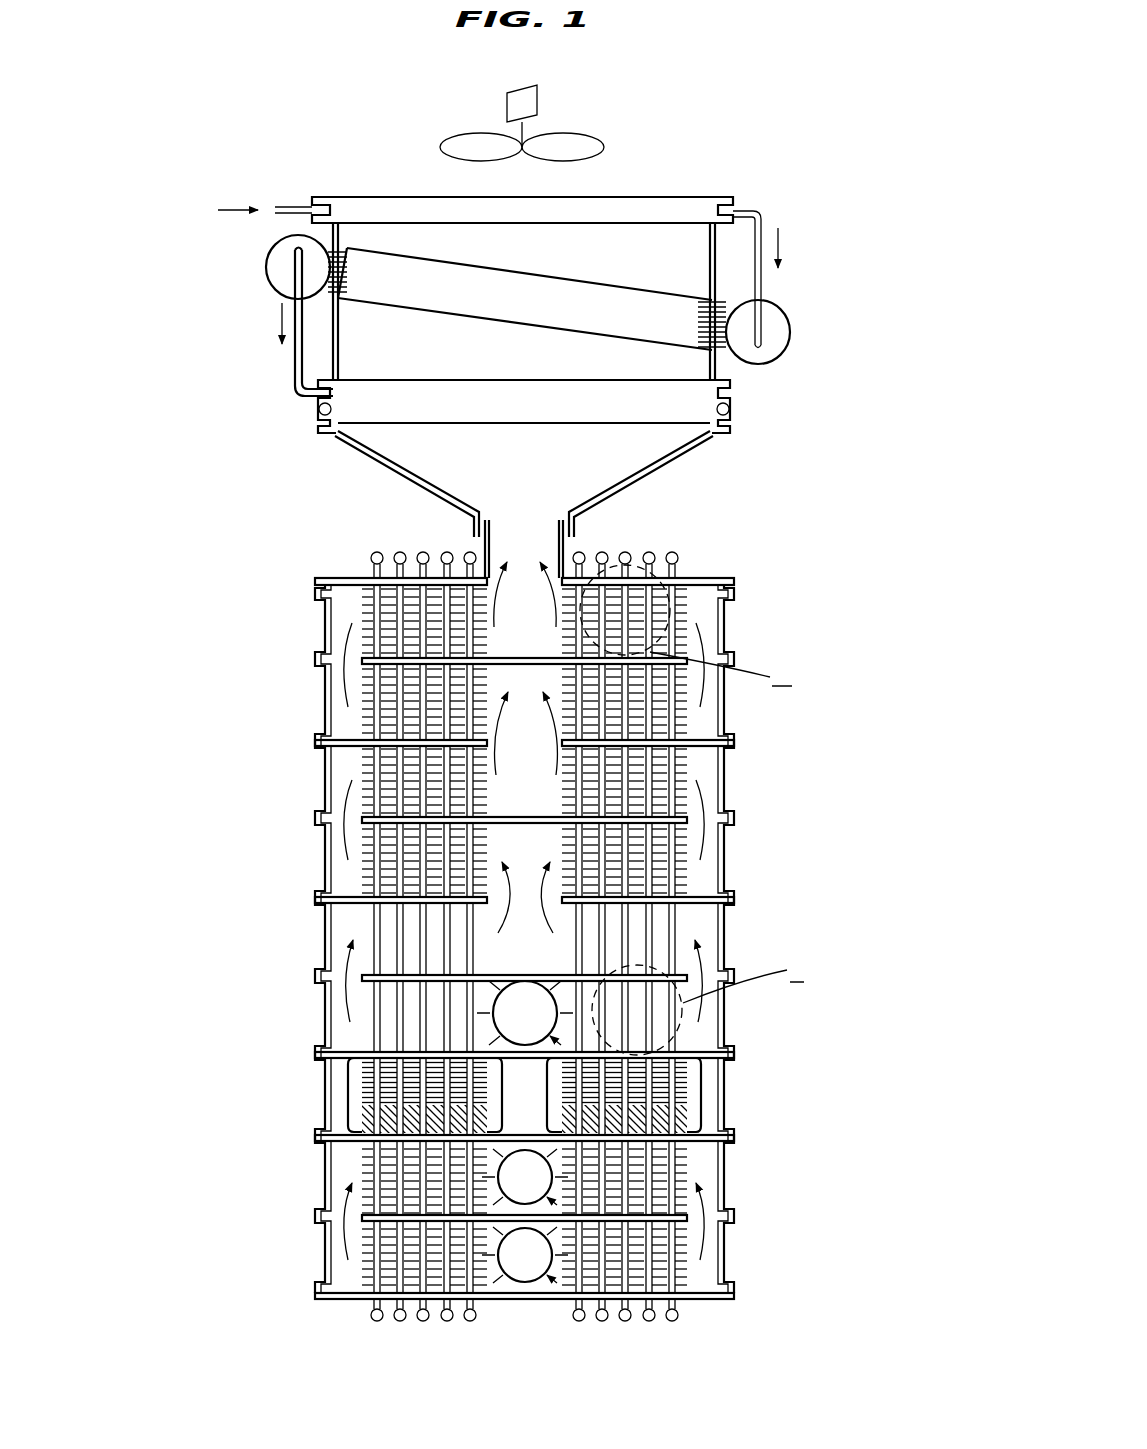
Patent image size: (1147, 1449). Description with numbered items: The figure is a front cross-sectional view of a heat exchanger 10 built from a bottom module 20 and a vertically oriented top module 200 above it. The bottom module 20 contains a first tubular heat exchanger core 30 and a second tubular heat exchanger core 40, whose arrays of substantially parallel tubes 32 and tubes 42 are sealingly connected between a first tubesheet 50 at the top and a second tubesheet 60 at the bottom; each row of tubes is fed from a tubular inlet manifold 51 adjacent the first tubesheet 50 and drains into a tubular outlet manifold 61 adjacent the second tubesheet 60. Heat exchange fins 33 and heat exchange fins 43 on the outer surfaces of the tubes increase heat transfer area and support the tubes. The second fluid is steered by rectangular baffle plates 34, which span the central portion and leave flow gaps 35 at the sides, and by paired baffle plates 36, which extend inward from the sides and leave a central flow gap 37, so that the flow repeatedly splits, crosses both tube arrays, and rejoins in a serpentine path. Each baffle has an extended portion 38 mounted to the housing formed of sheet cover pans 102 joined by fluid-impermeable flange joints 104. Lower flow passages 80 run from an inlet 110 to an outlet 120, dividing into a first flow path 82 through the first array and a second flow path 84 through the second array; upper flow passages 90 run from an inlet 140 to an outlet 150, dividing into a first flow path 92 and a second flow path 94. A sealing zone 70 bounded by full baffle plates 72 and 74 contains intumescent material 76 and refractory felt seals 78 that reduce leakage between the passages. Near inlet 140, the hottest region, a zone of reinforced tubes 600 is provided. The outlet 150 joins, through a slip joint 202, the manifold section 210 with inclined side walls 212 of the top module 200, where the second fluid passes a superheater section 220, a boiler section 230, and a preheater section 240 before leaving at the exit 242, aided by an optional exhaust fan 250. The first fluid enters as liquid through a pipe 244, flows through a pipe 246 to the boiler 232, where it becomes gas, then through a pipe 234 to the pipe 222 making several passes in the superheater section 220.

The heat exchanger 10 is at (165, 225).
The bottom module 20 is at (216, 1305).
The first tubular heat exchanger core 30 is at (393, 605).
The tubes of the first core 32 is at (378, 720).
The heat exchange fins 33 is at (412, 600).
The baffle plate 34 is at (519, 657).
The flow gap 35 is at (345, 982).
The baffle plate 36 is at (345, 740).
The central flow gap 37 is at (522, 870).
The extended portion 38 is at (316, 745).
The second tubular heat exchanger core 40 is at (662, 782).
The tubes of the second core 42 is at (680, 767).
The heat exchange fins 43 is at (680, 620).
The first tubesheet 50 is at (330, 578).
The inlet manifold 51 is at (678, 556).
The second tubesheet 60 is at (737, 1296).
The outlet manifold 61 is at (675, 1320).
The sealing zone 70 is at (280, 1135).
The full baffle plate 72 is at (708, 1135).
The full baffle plate 74 is at (714, 1052).
The intumescent material 76 is at (688, 1116).
The refractory felt seal 78 is at (690, 1080).
The lower flow passages 80 is at (280, 1295).
The first flow path 82 is at (345, 1270).
The second flow path 84 is at (718, 1265).
The upper flow passages 90 is at (280, 1050).
The first flow path 92 is at (358, 926).
The second flow path 94 is at (705, 925).
The sheet cover pan 102 is at (730, 632).
The flange joint 104 is at (735, 585).
The inlet 110 is at (527, 1270).
The outlet 120 is at (527, 1177).
The inlet 140 is at (541, 1025).
The outlet 150 is at (490, 533).
The top module 200 is at (216, 187).
The slip joint 202 is at (580, 527).
The manifold section 210 is at (675, 461).
The inclined side wall 212 is at (428, 483).
The superheater section 220 is at (743, 402).
The pipe 222 is at (736, 394).
The boiler section 230 is at (725, 270).
The boiler 232 is at (793, 335).
The pipe 234 is at (293, 372).
The preheater section 240 is at (748, 207).
The exit 242 is at (382, 197).
The pipe 244 is at (280, 205).
The pipe 246 is at (764, 214).
The exhaust fan 250 is at (603, 127).
The zone of reinforced tubes 600 is at (768, 897).